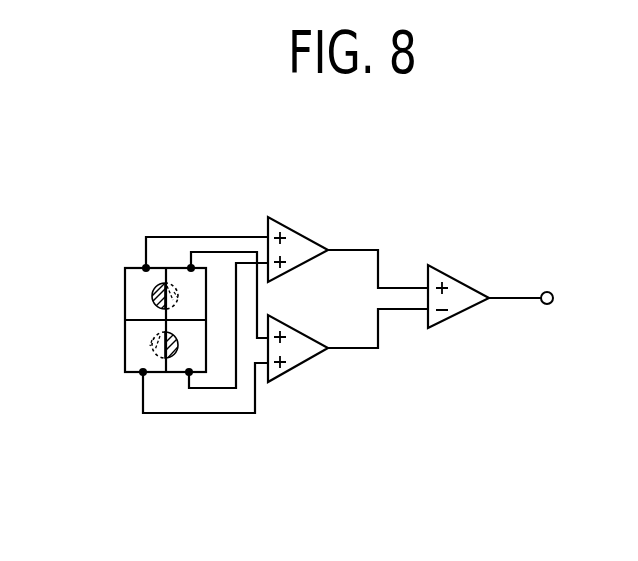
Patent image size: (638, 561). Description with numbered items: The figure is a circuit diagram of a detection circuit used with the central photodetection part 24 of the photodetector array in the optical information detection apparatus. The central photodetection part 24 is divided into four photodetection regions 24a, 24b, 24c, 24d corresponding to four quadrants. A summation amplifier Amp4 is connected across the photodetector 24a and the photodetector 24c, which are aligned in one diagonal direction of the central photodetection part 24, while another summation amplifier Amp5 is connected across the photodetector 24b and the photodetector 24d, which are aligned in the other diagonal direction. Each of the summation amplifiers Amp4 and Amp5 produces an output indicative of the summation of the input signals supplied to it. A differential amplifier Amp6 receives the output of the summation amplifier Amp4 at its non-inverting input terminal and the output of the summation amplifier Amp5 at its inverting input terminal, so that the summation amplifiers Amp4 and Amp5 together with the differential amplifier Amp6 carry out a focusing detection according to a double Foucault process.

The central photodetection part 24 is at (119, 265).
The photodetection region 24a is at (145, 292).
The photodetection region 24b is at (137, 345).
The photodetection region 24c is at (172, 377).
The photodetection region 24d is at (193, 292).
The summation amplifier Amp4 is at (300, 225).
The summation amplifier Amp5 is at (288, 370).
The differential amplifier Amp6 is at (445, 323).